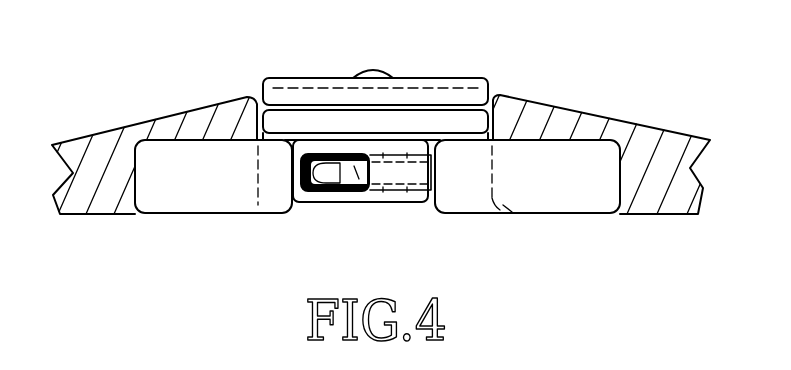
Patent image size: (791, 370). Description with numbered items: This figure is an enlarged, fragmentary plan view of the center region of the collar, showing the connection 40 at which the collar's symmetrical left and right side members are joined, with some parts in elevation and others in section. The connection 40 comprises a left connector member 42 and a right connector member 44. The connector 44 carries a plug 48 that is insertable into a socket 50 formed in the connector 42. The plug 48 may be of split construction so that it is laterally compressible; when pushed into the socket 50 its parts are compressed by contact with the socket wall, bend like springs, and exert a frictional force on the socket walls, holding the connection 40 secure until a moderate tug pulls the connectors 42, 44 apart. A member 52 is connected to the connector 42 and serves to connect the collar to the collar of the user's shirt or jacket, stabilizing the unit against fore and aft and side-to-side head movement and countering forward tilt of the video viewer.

The center connection 40 is at (288, 230).
The left connector member 42 is at (268, 178).
The right connector member 44 is at (473, 197).
The plug 48 is at (367, 190).
The socket 50 is at (318, 194).
The member 52 is at (327, 78).